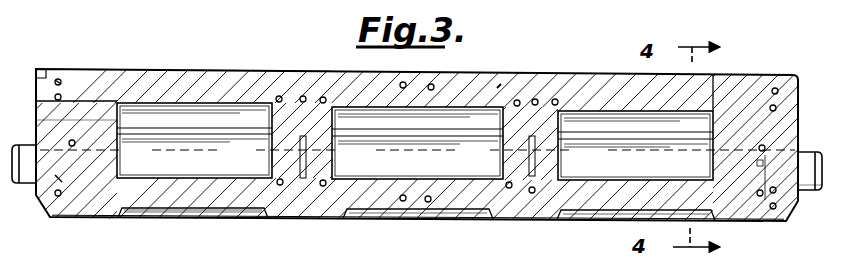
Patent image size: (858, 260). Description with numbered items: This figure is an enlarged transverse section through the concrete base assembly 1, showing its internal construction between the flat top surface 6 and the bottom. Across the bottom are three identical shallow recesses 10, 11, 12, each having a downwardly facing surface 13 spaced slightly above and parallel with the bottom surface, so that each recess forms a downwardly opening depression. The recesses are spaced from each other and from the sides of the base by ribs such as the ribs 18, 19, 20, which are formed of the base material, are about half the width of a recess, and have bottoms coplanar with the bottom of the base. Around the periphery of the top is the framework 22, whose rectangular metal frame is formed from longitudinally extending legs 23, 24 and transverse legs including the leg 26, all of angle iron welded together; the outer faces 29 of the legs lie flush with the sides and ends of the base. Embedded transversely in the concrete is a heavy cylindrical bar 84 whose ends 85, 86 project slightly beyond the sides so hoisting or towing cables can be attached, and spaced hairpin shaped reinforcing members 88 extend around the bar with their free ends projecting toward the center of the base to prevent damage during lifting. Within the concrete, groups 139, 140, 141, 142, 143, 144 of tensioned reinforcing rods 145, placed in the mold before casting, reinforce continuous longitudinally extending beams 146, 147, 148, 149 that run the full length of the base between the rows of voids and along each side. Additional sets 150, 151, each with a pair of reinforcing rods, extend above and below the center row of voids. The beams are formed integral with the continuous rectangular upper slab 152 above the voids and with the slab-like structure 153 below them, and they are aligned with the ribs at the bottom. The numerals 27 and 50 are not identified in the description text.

The concrete base assembly 1 is at (200, 58).
The top surface 6 is at (137, 70).
The shallow recess 10 is at (172, 218).
The shallow recess 11 is at (424, 219).
The shallow recess 12 is at (610, 220).
The downwardly facing surface 13 is at (225, 218).
The rib 18 is at (301, 219).
The rib 19 is at (528, 219).
The rib 20 is at (745, 221).
The framework 22 is at (786, 72).
The longitudinally extending leg 23 is at (801, 78).
The longitudinally extending leg 24 is at (40, 70).
The transverse leg 26 is at (25, 257).
The right side wall 27 is at (800, 98).
The outer face 29 is at (37, 82).
The base 50 is at (469, 257).
The cylindrical bar 84 is at (822, 172).
The bar end 85 is at (808, 192).
The bar end 86 is at (24, 175).
The hairpin shaped reinforcing member 88 is at (415, 141).
The group of reinforcing rods 139 is at (323, 97).
The group of reinforcing rods 140 is at (303, 96).
The group of reinforcing rods 141 is at (560, 73).
The group of reinforcing rods 142 is at (535, 99).
The group of reinforcing rods 143 is at (60, 96).
The group of reinforcing rods 144 is at (775, 88).
The reinforcing rod 145 is at (279, 96).
The longitudinal beam 146 is at (68, 123).
The longitudinal beam 147 is at (282, 165).
The longitudinal beam 148 is at (535, 176).
The longitudinal beam 149 is at (740, 130).
The set of reinforcing rods 150 is at (434, 85).
The set of reinforcing rods 151 is at (400, 202).
The upper slab 152 is at (497, 88).
The slab-like structure 153 is at (463, 199).